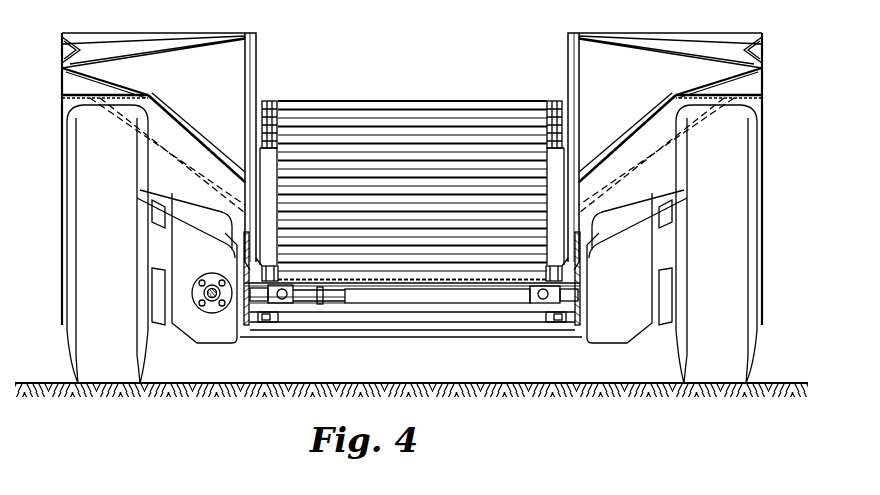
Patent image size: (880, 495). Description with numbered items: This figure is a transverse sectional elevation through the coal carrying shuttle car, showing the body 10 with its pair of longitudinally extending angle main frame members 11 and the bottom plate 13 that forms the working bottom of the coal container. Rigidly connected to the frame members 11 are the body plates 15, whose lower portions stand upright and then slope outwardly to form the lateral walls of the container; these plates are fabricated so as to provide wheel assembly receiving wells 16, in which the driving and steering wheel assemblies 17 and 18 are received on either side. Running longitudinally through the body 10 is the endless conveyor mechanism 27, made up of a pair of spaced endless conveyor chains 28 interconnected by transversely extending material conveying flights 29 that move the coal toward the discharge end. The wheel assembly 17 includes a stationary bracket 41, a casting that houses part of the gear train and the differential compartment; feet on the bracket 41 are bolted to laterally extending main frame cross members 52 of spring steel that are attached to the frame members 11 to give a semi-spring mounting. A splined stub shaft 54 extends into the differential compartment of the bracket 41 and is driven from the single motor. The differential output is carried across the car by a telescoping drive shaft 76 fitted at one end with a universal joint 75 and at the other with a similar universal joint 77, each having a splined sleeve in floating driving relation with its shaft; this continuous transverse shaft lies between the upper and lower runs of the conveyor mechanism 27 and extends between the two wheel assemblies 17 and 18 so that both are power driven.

The body 10 is at (556, 75).
The angle main frame member 11 is at (225, 233).
The bottom plate 13 is at (483, 286).
The body plate 15 is at (201, 137).
The wheel assembly receiving well 16 is at (412, 247).
The wheel assembly 17 is at (63, 356).
The wheel assembly 18 is at (762, 358).
The endless conveyor mechanism 27 is at (432, 101).
The endless conveyor chain 28 is at (270, 102).
The material conveying flight 29 is at (430, 274).
The stationary bracket 41 is at (207, 324).
The main frame cross member 52 is at (345, 334).
The splined stub shaft 54 is at (212, 288).
The universal joint 75 is at (262, 298).
The telescoping drive shaft 76 is at (445, 299).
The universal joint 77 is at (540, 299).